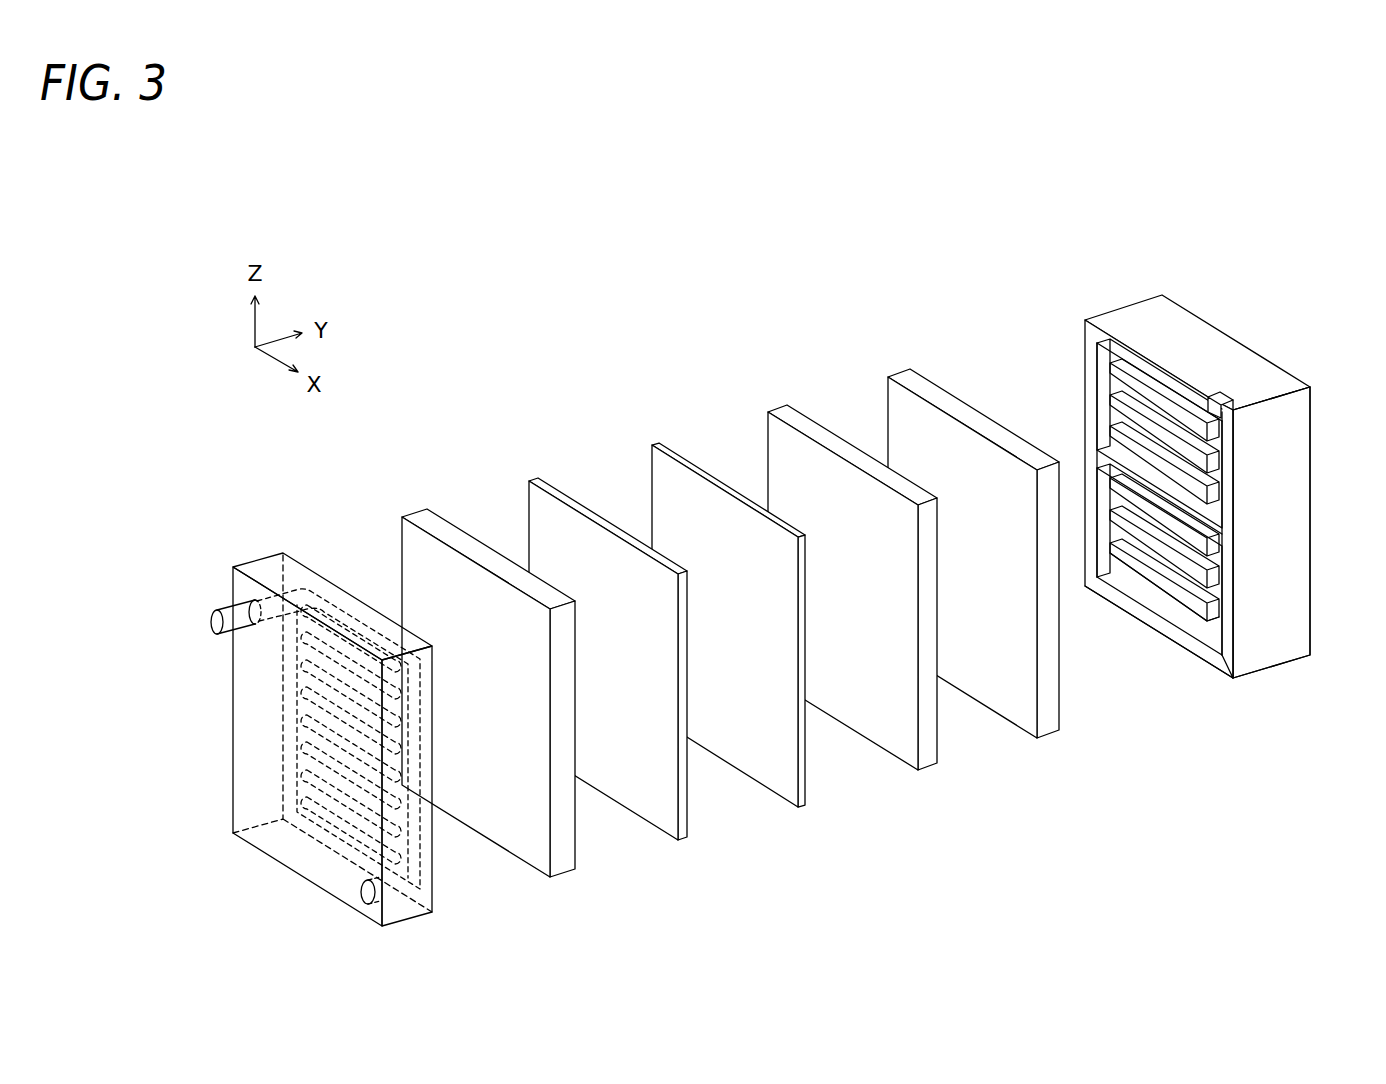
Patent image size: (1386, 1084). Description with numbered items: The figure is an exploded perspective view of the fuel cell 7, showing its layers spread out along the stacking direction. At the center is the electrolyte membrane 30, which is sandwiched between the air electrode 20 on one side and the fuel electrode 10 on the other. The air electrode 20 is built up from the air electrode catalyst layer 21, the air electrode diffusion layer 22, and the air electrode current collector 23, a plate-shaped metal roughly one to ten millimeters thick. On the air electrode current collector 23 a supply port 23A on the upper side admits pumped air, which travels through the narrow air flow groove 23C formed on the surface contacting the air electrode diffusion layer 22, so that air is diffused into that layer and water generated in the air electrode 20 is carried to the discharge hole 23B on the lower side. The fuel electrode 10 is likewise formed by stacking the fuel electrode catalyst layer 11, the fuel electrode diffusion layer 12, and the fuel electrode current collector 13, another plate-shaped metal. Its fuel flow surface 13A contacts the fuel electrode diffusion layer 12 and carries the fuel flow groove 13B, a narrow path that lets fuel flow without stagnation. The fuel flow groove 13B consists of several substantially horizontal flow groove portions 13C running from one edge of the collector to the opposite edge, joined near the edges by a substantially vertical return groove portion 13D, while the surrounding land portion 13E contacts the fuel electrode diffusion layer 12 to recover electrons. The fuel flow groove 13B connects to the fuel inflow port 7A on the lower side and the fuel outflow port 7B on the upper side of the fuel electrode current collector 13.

The fuel cell 7 is at (1228, 244).
The fuel inflow port 7A is at (1215, 665).
The fuel outflow port 7B is at (1220, 392).
The fuel electrode 10 is at (802, 313).
The fuel electrode catalyst layer 11 is at (795, 412).
The fuel electrode diffusion layer 12 is at (917, 382).
The fuel electrode current collector 13 is at (1103, 322).
The fuel flow surface 13A is at (1223, 473).
The fuel flow groove 13B is at (1180, 698).
The flow groove portions 13C is at (1177, 617).
The return groove portion 13D is at (1103, 523).
The land portion 13E is at (1195, 615).
The air electrode 20 is at (306, 461).
The air electrode catalyst layer 21 is at (530, 478).
The air electrode diffusion layer 22 is at (414, 512).
The air electrode current collector 23 is at (294, 575).
The supply port 23A is at (210, 623).
The discharge hole 23B is at (362, 897).
The air flow groove 23C is at (295, 738).
The electrolyte membrane 30 is at (655, 447).